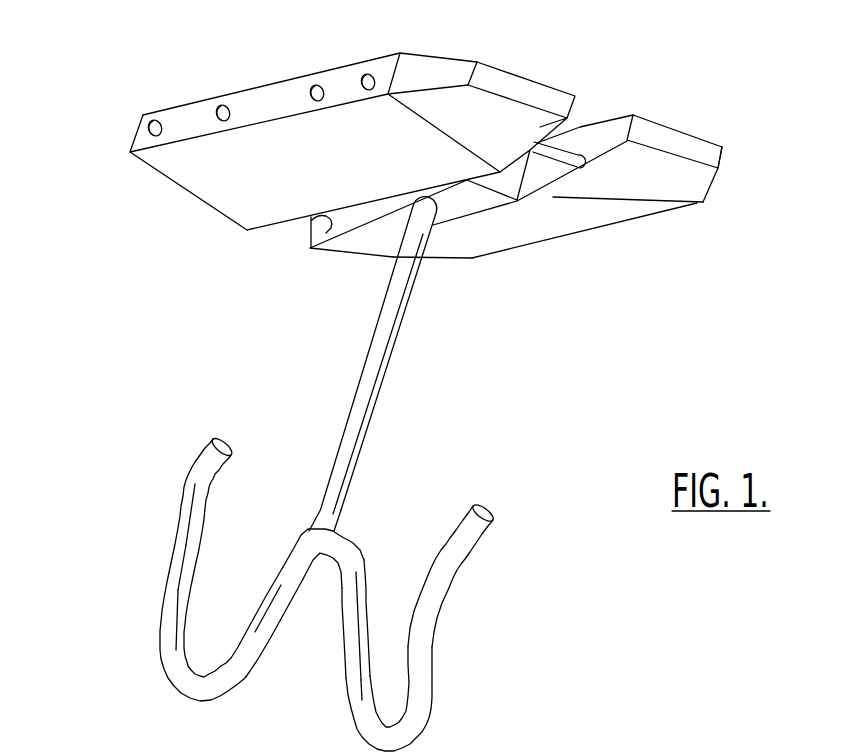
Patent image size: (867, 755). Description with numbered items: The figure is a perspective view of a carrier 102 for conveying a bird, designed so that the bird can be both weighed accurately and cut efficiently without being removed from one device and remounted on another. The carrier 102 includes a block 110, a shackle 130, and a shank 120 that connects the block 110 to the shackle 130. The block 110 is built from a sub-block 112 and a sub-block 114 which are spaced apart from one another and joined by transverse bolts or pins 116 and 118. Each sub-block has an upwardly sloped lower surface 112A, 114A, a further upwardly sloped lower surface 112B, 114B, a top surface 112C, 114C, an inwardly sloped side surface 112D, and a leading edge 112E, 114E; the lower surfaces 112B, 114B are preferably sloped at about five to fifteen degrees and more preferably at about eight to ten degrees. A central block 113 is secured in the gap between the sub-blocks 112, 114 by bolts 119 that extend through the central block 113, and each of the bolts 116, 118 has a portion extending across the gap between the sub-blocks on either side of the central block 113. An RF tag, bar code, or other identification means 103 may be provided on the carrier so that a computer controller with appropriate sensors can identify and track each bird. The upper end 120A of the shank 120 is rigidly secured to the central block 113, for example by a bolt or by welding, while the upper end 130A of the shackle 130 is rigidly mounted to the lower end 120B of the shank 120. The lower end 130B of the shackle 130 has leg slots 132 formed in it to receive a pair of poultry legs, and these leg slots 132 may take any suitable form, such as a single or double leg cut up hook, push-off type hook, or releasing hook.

The carrier 102 is at (110, 137).
The identification means 103 is at (212, 107).
The block 110 is at (690, 231).
The sub-block 112 is at (180, 110).
The upwardly sloped lower surface 112A is at (577, 95).
The upwardly sloped lower surface 112B is at (193, 183).
The top surface 112C is at (342, 63).
The inwardly sloped side surface 112D is at (450, 65).
The leading edge 112E is at (533, 87).
The central block 113 is at (310, 249).
The sub-block 114 is at (530, 235).
The upwardly sloped lower surface 114A is at (700, 185).
The upwardly sloped lower surface 114B is at (450, 245).
The top surface 114C is at (680, 130).
The leading edge 114E is at (713, 152).
The transverse bolt 116 is at (576, 160).
The transverse bolt 118 is at (312, 222).
The bolt 119 is at (313, 83).
The shank 120 is at (372, 402).
The upper end of shank 120A is at (415, 208).
The lower end of shank 120B is at (330, 530).
The shackle 130 is at (455, 570).
The upper end of shackle 130A is at (297, 530).
The lower end of shackle 130B is at (410, 742).
The leg slots 132 is at (195, 658).